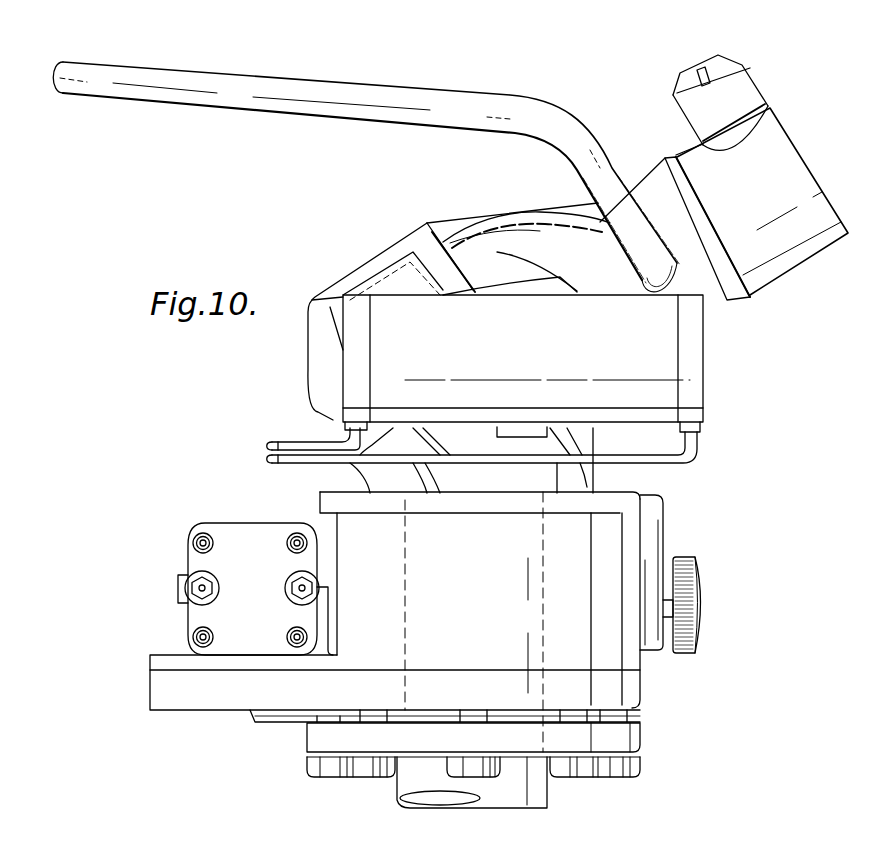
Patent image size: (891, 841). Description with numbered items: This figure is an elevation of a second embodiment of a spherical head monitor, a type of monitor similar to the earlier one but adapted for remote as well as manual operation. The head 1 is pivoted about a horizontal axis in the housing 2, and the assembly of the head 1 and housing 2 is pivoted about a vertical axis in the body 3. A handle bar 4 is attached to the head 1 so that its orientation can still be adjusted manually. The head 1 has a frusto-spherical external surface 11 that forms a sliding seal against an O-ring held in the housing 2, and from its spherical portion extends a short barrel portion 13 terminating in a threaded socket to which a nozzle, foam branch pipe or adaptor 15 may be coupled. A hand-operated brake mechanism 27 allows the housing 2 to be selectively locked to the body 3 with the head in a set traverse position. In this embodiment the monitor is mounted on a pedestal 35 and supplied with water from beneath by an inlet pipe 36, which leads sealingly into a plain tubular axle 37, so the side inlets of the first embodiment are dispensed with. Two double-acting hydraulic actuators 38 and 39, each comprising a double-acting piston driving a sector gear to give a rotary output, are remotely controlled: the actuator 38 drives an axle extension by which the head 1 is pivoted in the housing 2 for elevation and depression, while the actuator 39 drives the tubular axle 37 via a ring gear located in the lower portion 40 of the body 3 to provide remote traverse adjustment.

The head 1 is at (526, 206).
The housing 2 is at (360, 261).
The body 3 is at (668, 538).
The handle bar 4 is at (345, 127).
The frusto-spherical external surface 11 is at (493, 230).
The barrel portion 13 is at (723, 310).
The adaptor 15 is at (792, 167).
The hand-operated brake mechanism 27 is at (706, 568).
The pedestal 35 is at (795, 735).
The inlet pipe 36 is at (530, 787).
The tubular axle 37 is at (543, 620).
The hydraulic actuator 38 is at (705, 393).
The hydraulic actuator 39 is at (272, 490).
The lower portion 40 is at (250, 695).